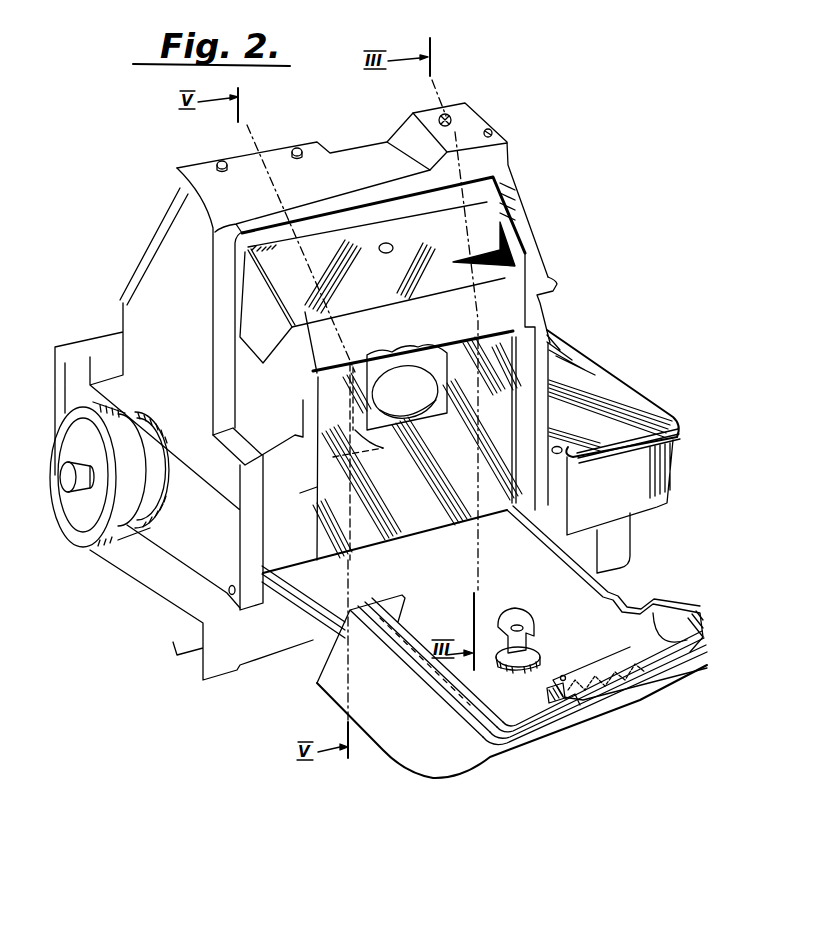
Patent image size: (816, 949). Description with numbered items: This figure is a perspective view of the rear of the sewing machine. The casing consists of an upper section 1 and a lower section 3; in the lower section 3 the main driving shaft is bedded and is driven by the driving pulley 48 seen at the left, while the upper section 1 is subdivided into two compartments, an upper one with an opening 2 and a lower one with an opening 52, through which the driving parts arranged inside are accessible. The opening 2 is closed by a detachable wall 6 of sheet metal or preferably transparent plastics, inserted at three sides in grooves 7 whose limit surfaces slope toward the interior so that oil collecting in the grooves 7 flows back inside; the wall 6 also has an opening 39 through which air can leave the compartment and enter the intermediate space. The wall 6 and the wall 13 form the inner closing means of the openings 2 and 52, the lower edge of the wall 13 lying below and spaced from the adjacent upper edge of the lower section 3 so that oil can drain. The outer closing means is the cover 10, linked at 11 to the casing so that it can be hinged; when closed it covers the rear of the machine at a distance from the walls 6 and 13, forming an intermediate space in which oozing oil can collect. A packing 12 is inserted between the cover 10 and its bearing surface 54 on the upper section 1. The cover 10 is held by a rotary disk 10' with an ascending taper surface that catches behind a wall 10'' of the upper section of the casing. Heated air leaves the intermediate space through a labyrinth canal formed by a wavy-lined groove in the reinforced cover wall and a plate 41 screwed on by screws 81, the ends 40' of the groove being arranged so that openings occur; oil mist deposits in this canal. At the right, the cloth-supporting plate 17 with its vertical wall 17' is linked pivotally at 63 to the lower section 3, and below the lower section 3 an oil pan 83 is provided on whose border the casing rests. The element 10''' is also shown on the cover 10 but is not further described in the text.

The upper section of the casing 1 is at (178, 338).
The opening 2 is at (522, 261).
The lower section of the casing 3 is at (293, 545).
The detachable wall 6 is at (408, 240).
The grooves 7 is at (244, 250).
The cover 10 is at (512, 666).
The rotary disk 10' is at (518, 621).
The wall of the upper section of the casing 10'' is at (390, 401).
The block 10''' is at (541, 746).
The link 11 is at (228, 592).
The packing 12 is at (447, 697).
The wall 13 is at (547, 386).
The cloth-supporting plate 17 is at (611, 385).
The wall of the cloth-supporting plate 17' is at (630, 506).
The opening 39 is at (380, 252).
The ends of the groove 40' is at (592, 751).
The plate 41 is at (603, 663).
The driving pulley 48 is at (113, 543).
The opening 52 is at (560, 343).
The bearing surface 54 is at (377, 200).
The pivot 63 is at (558, 446).
The screws 81 is at (562, 674).
The oil pan 83 is at (190, 647).